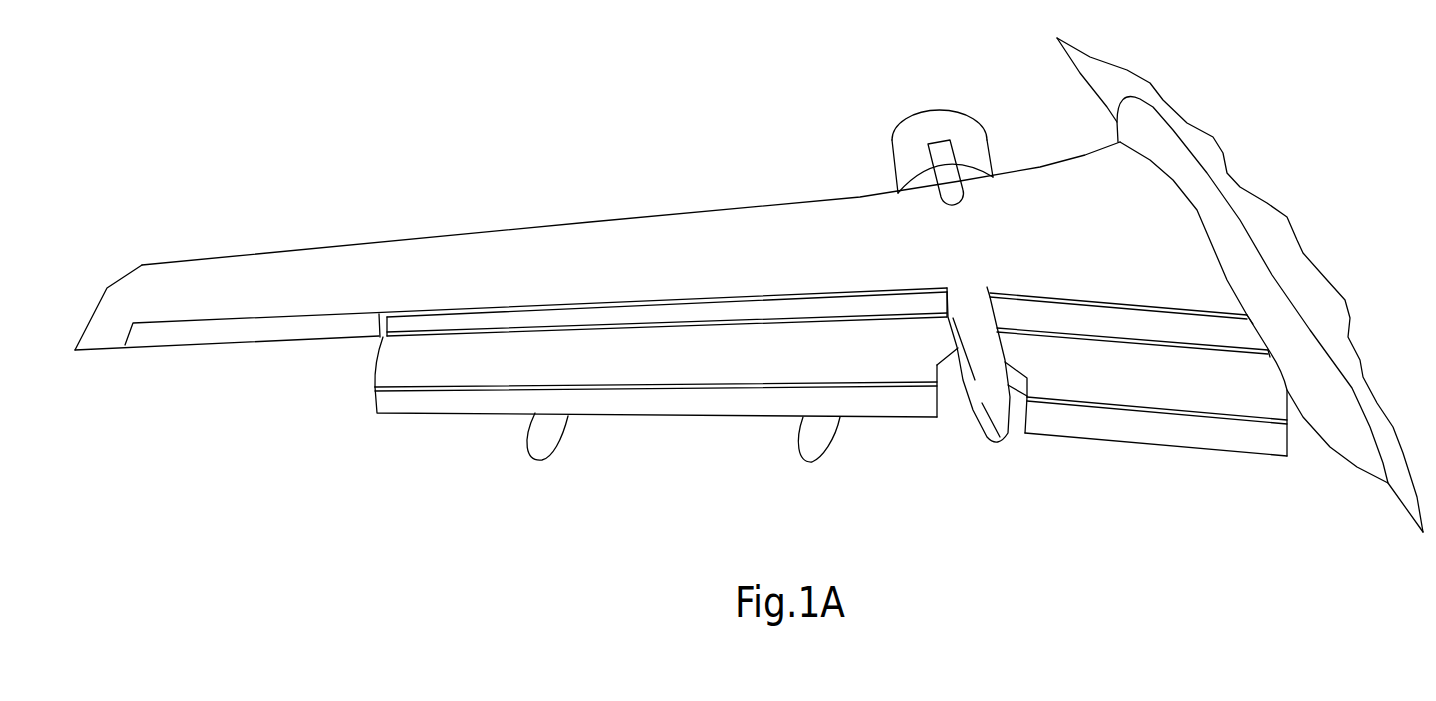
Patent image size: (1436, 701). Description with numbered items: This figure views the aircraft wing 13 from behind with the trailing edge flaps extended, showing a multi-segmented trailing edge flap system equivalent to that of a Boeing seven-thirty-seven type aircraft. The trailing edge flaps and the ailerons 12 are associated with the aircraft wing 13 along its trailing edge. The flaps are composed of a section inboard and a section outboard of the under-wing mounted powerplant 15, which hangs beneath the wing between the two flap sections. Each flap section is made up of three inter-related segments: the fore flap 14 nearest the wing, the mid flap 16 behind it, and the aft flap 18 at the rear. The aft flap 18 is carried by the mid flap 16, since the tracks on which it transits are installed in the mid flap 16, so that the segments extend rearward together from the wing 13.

The aileron 12 is at (248, 332).
The aircraft wing 13 is at (517, 238).
The fore flap 14 is at (437, 320).
The under-wing mounted powerplant 15 is at (923, 110).
The mid flap 16 is at (657, 368).
The aft flap 18 is at (882, 395).